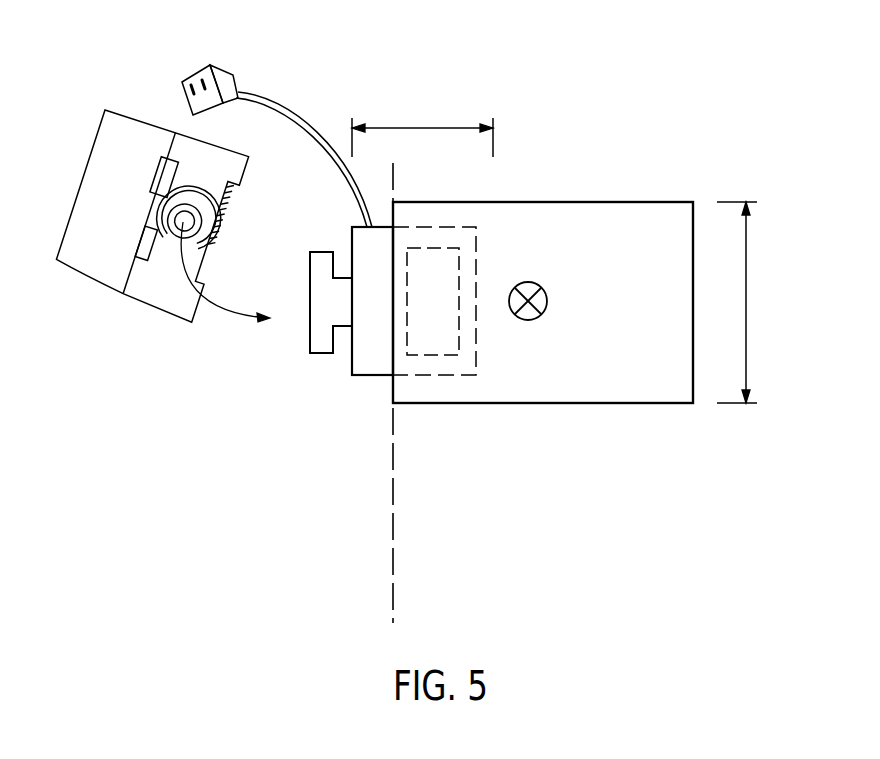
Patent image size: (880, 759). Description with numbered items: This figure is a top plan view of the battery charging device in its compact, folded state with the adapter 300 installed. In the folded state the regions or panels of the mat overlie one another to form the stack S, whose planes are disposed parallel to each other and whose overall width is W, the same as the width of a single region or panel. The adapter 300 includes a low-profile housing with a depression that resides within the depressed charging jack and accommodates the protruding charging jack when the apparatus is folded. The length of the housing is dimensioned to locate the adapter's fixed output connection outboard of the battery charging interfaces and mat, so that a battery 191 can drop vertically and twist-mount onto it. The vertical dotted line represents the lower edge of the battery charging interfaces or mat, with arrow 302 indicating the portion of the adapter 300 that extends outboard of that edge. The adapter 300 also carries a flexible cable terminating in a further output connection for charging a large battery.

The battery 191 is at (133, 211).
The adapter 300 is at (352, 392).
The arrow 302 is at (396, 606).
The stack S is at (528, 320).
The width W is at (747, 297).